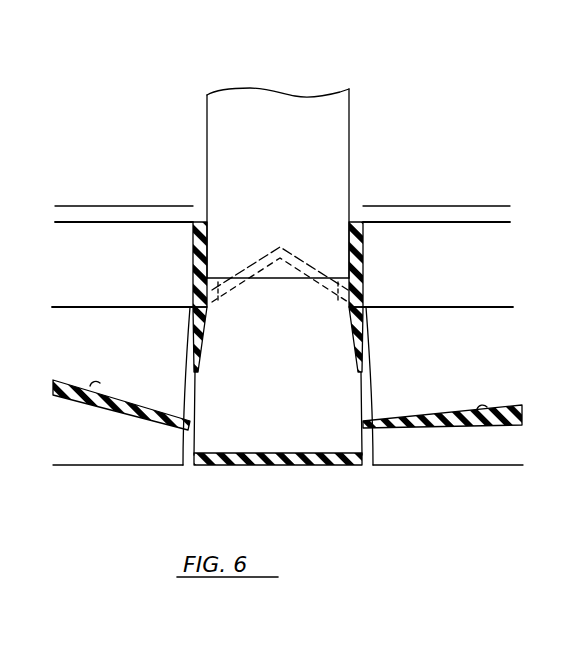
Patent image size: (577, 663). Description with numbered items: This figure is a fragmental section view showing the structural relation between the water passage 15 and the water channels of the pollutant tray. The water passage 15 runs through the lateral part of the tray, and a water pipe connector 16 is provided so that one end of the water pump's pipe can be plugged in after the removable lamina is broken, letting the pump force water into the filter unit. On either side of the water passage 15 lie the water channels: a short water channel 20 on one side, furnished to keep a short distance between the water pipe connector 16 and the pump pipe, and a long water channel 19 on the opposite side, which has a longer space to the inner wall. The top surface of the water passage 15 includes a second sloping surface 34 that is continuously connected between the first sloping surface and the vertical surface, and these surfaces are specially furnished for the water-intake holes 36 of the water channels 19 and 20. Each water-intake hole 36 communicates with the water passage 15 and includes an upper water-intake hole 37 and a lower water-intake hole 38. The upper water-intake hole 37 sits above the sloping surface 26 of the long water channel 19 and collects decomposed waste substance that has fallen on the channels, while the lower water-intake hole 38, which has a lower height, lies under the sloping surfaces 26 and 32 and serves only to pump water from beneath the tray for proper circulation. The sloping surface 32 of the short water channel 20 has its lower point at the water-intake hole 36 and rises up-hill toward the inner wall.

The water passage 15 is at (277, 422).
The water pipe connector 16 is at (358, 222).
The long water channel 19 is at (508, 343).
The short water channel 20 is at (80, 347).
The sloping surface 26 is at (483, 410).
The sloping surface 32 is at (96, 384).
The second sloping surface 34 is at (370, 343).
The water-intake hole 36 is at (177, 363).
The upper water-intake hole 37 is at (173, 390).
The lower water-intake hole 38 is at (187, 445).